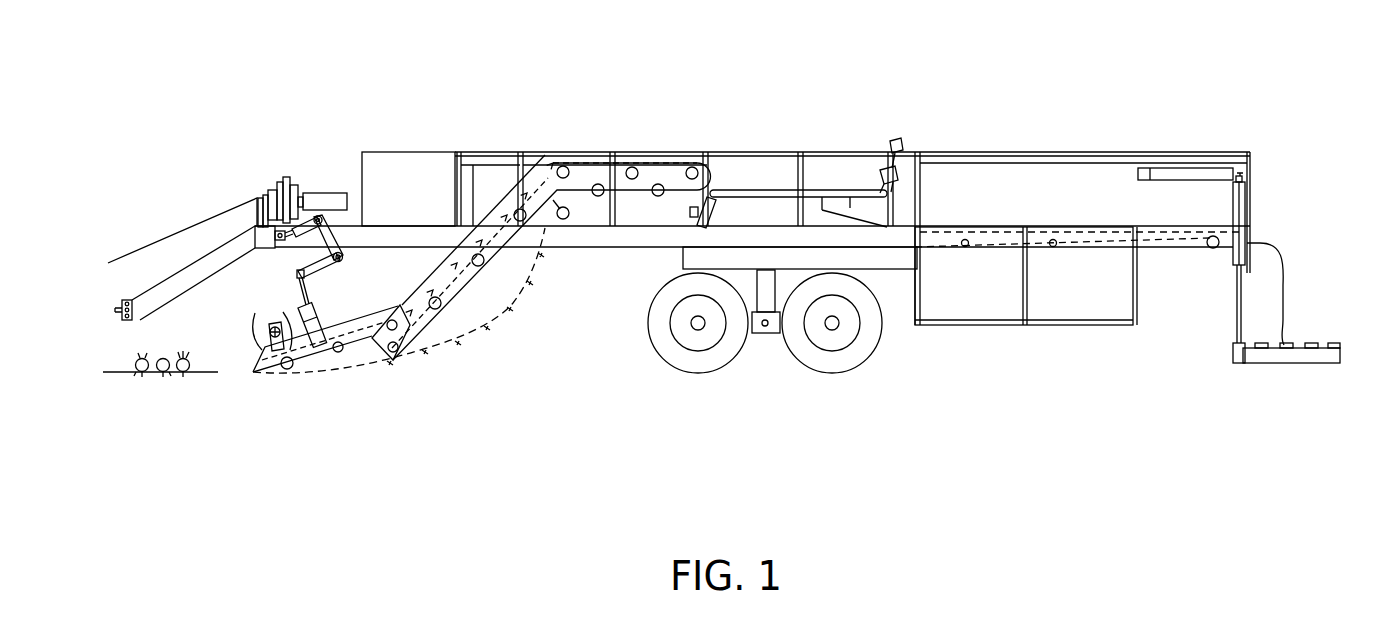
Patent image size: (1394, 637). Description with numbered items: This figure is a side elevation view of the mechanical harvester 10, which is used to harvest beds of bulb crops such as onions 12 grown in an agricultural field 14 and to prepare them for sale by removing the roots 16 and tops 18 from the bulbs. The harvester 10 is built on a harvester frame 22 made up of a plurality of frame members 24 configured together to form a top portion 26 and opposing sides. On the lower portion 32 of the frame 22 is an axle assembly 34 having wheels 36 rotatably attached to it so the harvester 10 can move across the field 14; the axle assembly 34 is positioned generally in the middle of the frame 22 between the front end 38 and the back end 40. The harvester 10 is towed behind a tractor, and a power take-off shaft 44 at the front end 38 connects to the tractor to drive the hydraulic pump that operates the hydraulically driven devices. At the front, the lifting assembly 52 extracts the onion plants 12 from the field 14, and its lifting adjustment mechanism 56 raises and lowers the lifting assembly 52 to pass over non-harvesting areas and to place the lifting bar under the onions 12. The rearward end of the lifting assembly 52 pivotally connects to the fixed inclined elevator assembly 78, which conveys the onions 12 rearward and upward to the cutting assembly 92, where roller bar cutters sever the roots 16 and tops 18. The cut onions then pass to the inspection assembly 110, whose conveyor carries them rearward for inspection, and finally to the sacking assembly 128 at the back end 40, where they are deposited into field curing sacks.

The mechanical harvester 10 is at (947, 62).
The onions 12 is at (190, 352).
The agricultural field 14 is at (115, 368).
The roots 16 is at (167, 380).
The tops 18 is at (148, 355).
The harvester frame 22 is at (1082, 153).
The frame members 24 is at (1172, 162).
The top portion 26 is at (497, 140).
The lower portion 32 is at (613, 257).
The axle assembly 34 is at (765, 345).
The wheels 36 is at (860, 347).
The front end 38 is at (167, 217).
The back end 40 is at (1328, 162).
The power take-off shaft 44 is at (222, 213).
The lifting assembly 52 is at (340, 317).
The lifting adjustment mechanism 56 is at (287, 273).
The inclined elevator assembly 78 is at (457, 303).
The cutting assembly 92 is at (757, 185).
The inspection assembly 110 is at (988, 190).
The sacking assembly 128 is at (1302, 250).